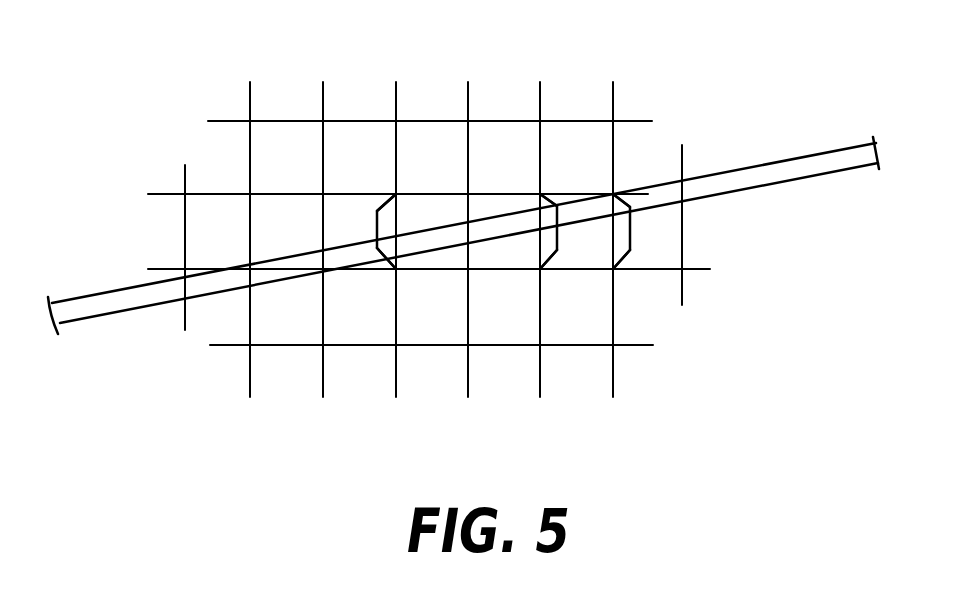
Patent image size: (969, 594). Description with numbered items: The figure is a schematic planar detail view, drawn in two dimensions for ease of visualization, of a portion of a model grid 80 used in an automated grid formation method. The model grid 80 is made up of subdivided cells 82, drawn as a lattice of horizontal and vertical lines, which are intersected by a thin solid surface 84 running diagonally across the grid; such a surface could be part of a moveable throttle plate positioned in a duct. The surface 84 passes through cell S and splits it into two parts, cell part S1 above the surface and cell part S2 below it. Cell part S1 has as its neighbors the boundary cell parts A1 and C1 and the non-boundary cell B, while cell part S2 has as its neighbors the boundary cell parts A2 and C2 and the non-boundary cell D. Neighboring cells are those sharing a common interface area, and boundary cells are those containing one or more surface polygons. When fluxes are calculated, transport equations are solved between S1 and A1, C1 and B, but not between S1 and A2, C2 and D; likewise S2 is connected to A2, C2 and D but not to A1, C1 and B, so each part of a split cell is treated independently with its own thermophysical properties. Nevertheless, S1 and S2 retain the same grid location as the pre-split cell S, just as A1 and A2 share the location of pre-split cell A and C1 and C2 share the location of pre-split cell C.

The model grid 80 is at (209, 380).
The subdivided cells 82 is at (248, 121).
The thin solid surface 84 is at (118, 292).
The pre-split cell A is at (377, 228).
The boundary cell part A1 is at (405, 210).
The boundary cell part A2 is at (445, 260).
The non-boundary cell B is at (504, 157).
The pre-split cell C is at (630, 223).
The boundary cell part C1 is at (577, 202).
The boundary cell part C2 is at (603, 236).
The non-boundary cell D is at (504, 307).
The cell S is at (560, 232).
The cell part S1 is at (493, 203).
The cell part S2 is at (513, 250).